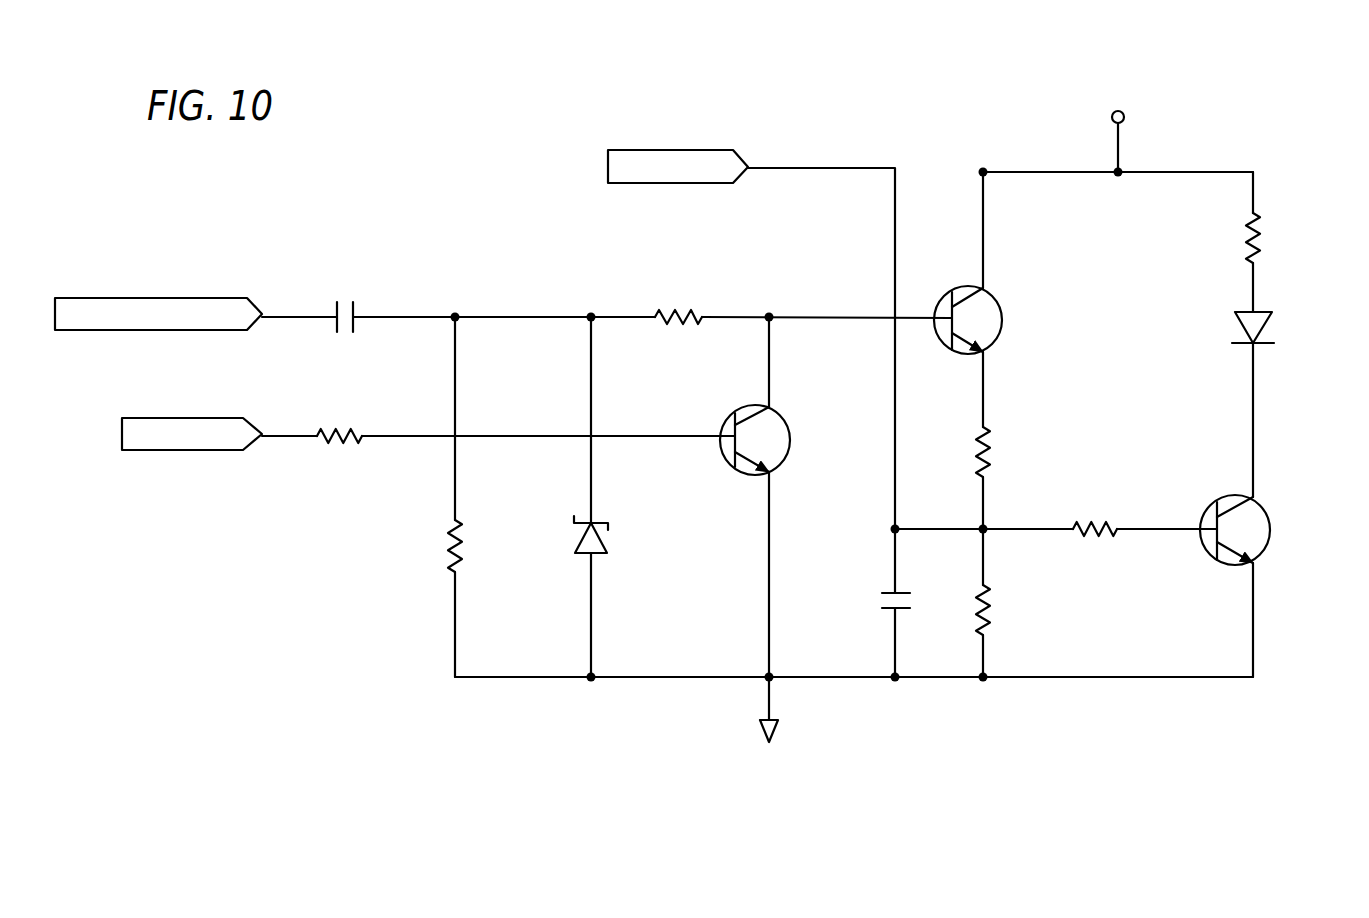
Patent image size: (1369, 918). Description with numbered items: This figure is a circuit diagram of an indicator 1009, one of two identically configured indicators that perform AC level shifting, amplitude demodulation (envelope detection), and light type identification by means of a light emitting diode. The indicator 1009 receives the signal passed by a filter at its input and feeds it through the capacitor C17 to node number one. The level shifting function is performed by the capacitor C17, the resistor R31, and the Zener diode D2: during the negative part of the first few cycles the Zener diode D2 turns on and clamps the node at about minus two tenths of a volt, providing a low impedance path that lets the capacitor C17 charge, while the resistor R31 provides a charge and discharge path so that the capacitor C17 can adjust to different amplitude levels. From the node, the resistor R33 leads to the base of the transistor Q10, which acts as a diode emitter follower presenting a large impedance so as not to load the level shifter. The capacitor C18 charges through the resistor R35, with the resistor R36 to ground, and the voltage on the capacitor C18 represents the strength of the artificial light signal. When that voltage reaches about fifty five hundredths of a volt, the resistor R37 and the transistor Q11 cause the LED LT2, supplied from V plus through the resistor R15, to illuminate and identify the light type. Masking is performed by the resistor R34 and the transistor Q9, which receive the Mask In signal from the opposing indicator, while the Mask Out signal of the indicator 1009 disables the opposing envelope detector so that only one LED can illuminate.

The indicator 1009 is at (1300, 76).
The capacitor C17 is at (340, 300).
The resistor R34 is at (344, 429).
The resistor R33 is at (692, 312).
The resistor R31 is at (440, 541).
The Zener diode D2 is at (608, 543).
The NPN transistor Q9 is at (790, 432).
The NPN transistor Q10 is at (1002, 310).
The NPN transistor Q11 is at (1268, 516).
The resistor R35 is at (992, 452).
The resistor R36 is at (992, 610).
The resistor R37 is at (1098, 522).
The capacitor C18 is at (878, 619).
The resistor R15 is at (1262, 241).
The LED LT2 is at (1276, 316).